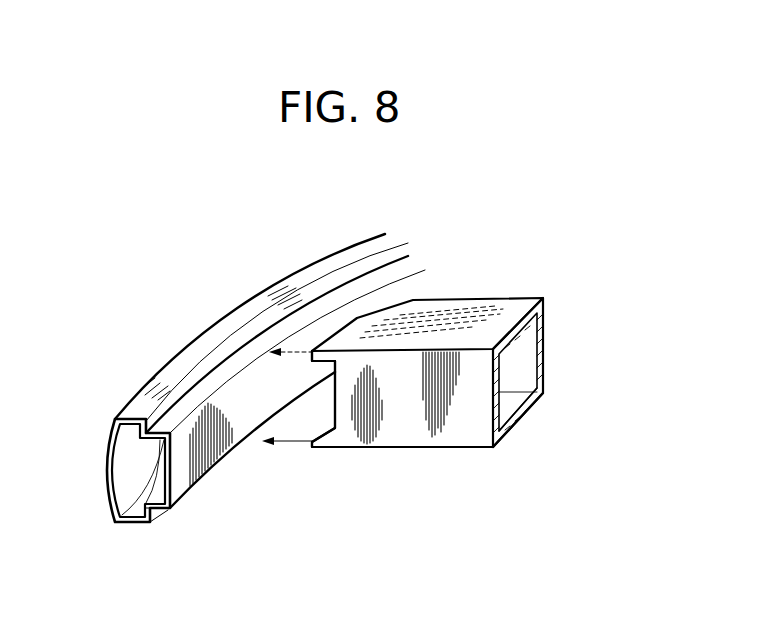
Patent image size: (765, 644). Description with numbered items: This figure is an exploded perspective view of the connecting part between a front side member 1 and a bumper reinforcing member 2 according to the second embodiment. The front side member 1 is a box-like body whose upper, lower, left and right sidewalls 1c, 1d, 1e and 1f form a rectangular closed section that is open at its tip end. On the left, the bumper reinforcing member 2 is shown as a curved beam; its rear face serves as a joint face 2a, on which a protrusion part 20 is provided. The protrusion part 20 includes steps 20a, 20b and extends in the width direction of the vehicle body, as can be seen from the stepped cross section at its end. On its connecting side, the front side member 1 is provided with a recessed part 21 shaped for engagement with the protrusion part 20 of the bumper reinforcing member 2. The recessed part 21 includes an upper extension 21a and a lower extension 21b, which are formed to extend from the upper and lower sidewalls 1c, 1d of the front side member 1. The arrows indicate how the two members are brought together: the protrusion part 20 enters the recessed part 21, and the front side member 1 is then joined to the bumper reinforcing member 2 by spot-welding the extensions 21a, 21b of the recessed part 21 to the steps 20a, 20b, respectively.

The front side member 1 is at (461, 283).
The upper sidewall 1c is at (503, 315).
The lower sidewall 1d is at (523, 423).
The left sidewall 1e is at (453, 433).
The right sidewall 1f is at (546, 346).
The bumper reinforcing member 2 is at (121, 377).
The joint face 2a is at (251, 333).
The protrusion part 20 is at (205, 470).
The step 20a is at (194, 396).
The step 20b is at (153, 516).
The recessed part 21 is at (318, 413).
The upper extension 21a is at (347, 330).
The lower extension 21b is at (324, 449).